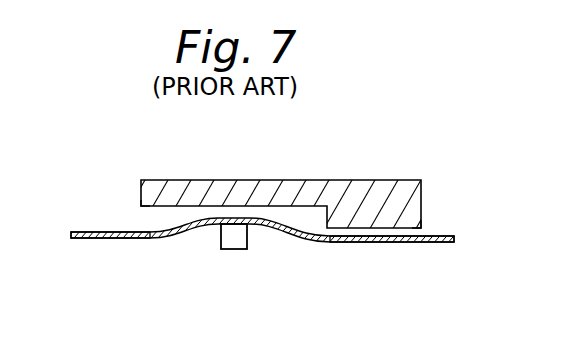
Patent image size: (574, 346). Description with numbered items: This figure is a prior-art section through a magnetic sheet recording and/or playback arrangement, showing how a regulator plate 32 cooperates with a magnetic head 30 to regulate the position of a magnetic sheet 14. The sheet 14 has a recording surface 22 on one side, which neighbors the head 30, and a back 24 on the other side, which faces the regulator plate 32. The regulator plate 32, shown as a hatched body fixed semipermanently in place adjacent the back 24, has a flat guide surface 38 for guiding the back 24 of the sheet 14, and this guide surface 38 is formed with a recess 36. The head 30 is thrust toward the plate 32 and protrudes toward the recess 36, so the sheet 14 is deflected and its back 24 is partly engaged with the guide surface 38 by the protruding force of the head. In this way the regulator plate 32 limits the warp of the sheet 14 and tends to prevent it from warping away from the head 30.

The magnetic sheet 14 is at (83, 239).
The recording surface 22 is at (309, 239).
The back 24 is at (92, 231).
The magnetic head 30 is at (235, 250).
The regulator plate 32 is at (375, 180).
The recess 36 is at (143, 209).
The guide surface 38 is at (420, 229).